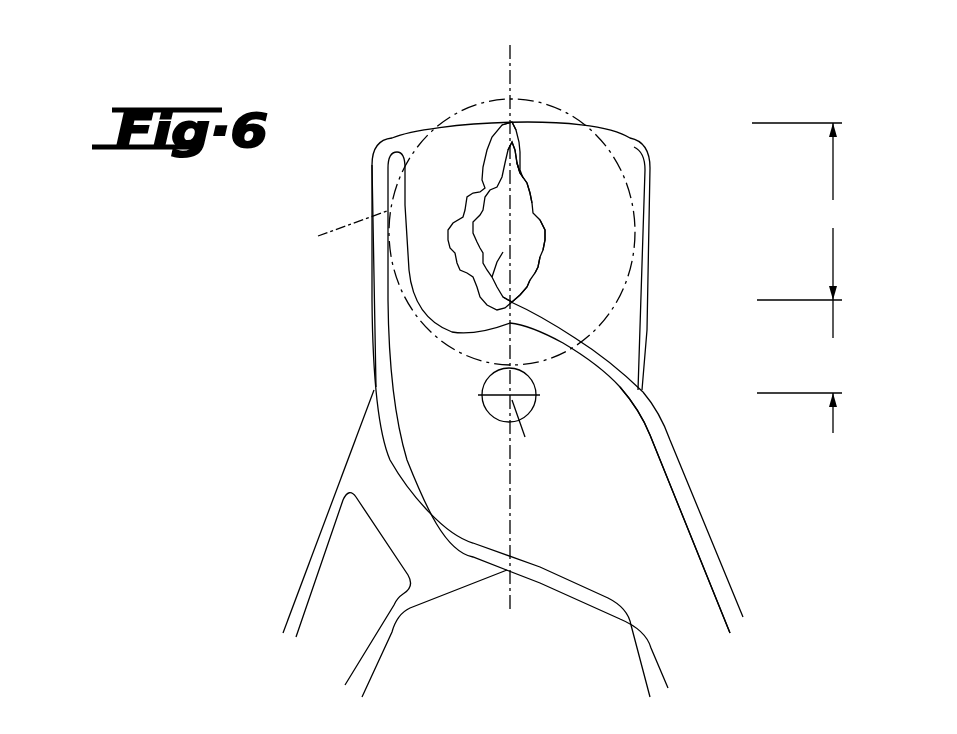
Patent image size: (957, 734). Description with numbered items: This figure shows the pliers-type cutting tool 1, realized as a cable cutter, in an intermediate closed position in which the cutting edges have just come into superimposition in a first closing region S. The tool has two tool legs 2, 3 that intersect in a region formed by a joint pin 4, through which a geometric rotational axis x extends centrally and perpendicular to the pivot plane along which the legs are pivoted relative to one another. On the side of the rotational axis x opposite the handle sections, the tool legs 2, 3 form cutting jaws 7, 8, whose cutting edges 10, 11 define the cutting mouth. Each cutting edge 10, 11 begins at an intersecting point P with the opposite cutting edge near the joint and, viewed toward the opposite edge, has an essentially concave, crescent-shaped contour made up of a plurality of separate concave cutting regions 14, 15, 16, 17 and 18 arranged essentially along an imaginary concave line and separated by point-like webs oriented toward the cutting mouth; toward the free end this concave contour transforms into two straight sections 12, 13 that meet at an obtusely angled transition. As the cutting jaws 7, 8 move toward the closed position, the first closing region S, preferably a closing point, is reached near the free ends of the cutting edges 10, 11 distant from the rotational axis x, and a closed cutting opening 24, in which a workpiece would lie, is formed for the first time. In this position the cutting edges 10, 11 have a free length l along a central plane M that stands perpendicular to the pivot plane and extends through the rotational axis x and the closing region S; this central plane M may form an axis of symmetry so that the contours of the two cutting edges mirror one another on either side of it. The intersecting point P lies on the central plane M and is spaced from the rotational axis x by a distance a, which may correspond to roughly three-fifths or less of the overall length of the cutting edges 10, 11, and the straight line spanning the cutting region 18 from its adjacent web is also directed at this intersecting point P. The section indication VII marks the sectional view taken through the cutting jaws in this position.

The pliers-type cutting tool 1 is at (400, 123).
The tool leg 2 is at (682, 575).
The tool leg 3 is at (312, 608).
The joint pin 4 is at (499, 405).
The cutting jaw 7 is at (425, 265).
The cutting jaw 8 is at (600, 299).
The cutting edge 10 is at (482, 191).
The cutting edge 11 is at (546, 222).
The straight section 12 is at (518, 150).
The straight section 13 is at (516, 134).
The concave cutting region 14 is at (519, 172).
The concave cutting region 15 is at (534, 193).
The concave cutting region 16 is at (546, 236).
The concave cutting region 17 is at (541, 266).
The concave cutting region 18 is at (527, 295).
The closed cutting opening 24 is at (497, 262).
The intersecting point P is at (510, 304).
The first closing region S is at (512, 122).
The central plane M is at (509, 334).
The rotational axis x is at (522, 428).
The free length l is at (797, 211).
The distance a is at (799, 366).
The section line VII is at (268, 228).